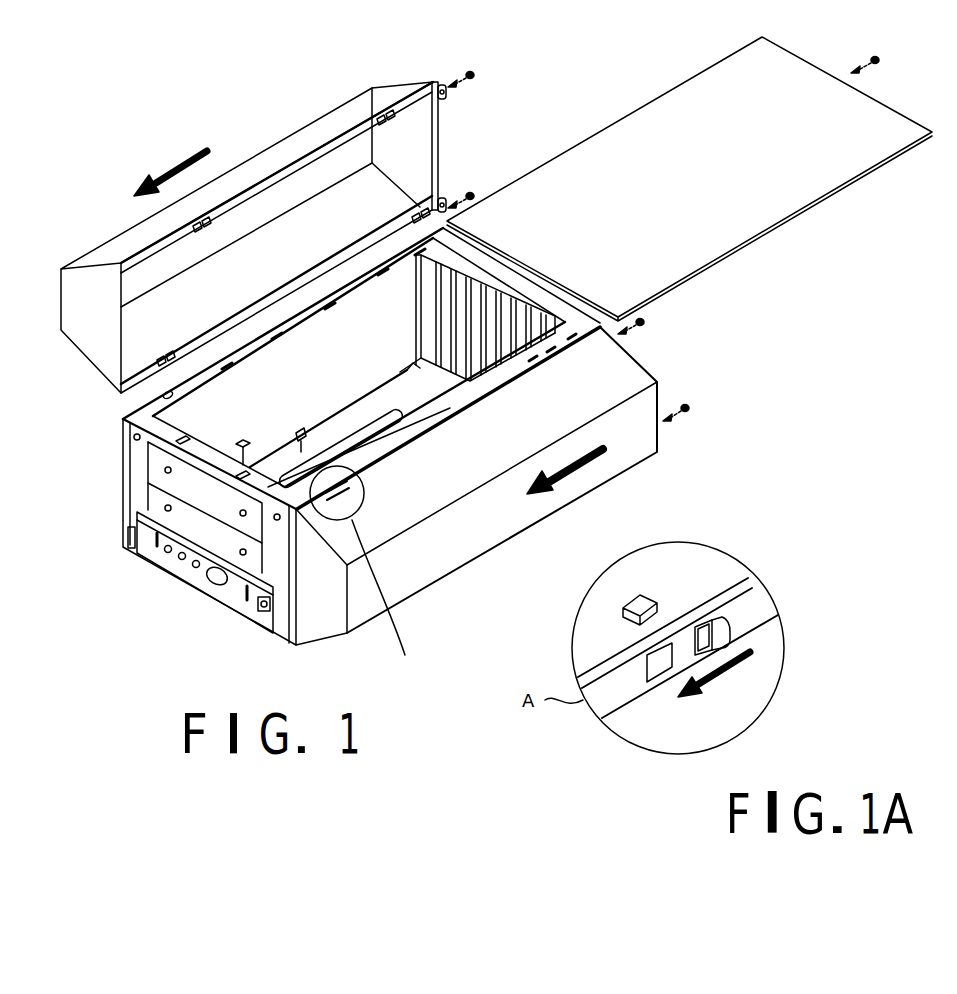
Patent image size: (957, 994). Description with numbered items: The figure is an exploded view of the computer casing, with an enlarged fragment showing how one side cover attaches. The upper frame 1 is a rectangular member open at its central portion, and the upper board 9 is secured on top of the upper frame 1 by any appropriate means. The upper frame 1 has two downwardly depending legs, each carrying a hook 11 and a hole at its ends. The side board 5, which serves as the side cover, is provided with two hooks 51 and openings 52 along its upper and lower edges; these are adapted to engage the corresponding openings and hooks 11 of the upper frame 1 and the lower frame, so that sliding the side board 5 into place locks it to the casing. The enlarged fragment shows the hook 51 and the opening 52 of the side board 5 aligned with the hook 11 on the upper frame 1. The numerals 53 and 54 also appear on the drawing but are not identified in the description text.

In FIG. 1, the computer chassis 1 is at (500, 270).
In FIG. 1A, the computer chassis 1 is at (718, 582).
In FIG. 1, the right side cover 5 is at (622, 372).
In FIG. 1A, the right side cover 5 is at (747, 622).
In FIG. 1, the top cover panel 9 is at (752, 212).
In FIG. 1A, the engaging slot of chassis 11 is at (700, 643).
In FIG. 1, the left side cover 51 is at (187, 230).
In FIG. 1A, the left side cover 51 is at (657, 668).
In FIG. 1, the hook tab of cover 52 is at (222, 212).
In FIG. 1A, the hook tab of cover 52 is at (717, 647).
In FIG. 1, the retaining clip 53 is at (155, 356).
In FIG. 1, the retaining slot 54 is at (165, 385).